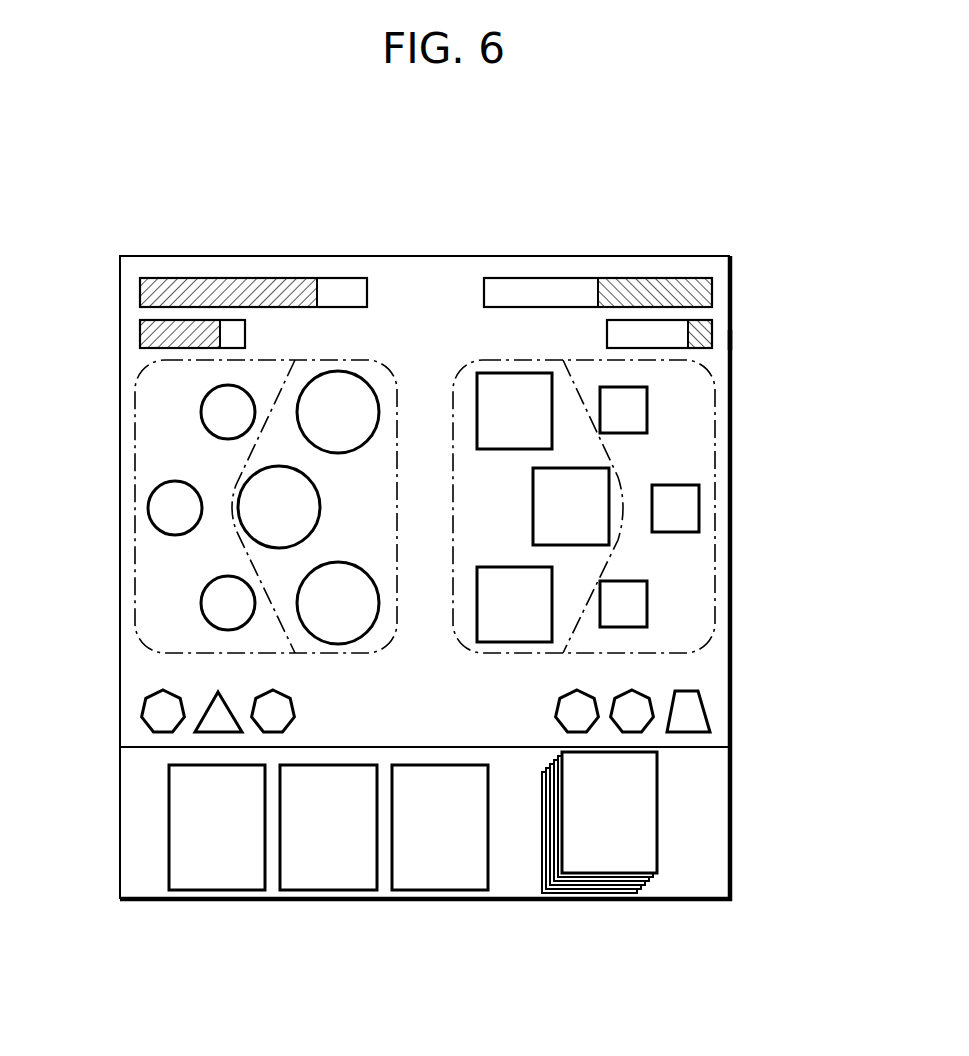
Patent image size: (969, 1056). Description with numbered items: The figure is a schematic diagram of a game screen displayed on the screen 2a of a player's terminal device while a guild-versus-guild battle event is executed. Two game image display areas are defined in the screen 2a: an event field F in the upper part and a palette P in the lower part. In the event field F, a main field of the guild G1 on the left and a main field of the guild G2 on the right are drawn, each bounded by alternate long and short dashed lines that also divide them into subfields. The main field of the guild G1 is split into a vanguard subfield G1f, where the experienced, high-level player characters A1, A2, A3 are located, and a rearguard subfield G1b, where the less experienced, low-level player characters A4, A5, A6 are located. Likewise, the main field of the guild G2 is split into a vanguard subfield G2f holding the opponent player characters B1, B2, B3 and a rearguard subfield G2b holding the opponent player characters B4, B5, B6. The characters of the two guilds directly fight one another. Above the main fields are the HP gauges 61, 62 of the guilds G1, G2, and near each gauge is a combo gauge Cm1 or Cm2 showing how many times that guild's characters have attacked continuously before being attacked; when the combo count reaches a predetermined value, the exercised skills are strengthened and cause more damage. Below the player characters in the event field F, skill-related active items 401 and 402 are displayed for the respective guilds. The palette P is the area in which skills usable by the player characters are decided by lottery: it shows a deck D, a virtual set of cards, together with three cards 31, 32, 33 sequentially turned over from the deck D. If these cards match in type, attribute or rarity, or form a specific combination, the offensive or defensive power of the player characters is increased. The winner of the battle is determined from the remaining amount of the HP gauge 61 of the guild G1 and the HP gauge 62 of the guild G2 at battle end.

The HP gauge 61 is at (265, 278).
The HP gauge 62 is at (612, 278).
The combo gauge Cm1 is at (156, 350).
The combo gauge Cm2 is at (713, 345).
The screen 2a is at (733, 342).
The event field F is at (430, 356).
The guild G1 is at (135, 500).
The subfield G1b is at (198, 461).
The subfield G1f is at (385, 517).
The player character A1 is at (338, 412).
The player character A2 is at (279, 507).
The player character A3 is at (338, 603).
The player character A4 is at (228, 412).
The player character A5 is at (175, 508).
The player character A6 is at (228, 603).
The guild G2 is at (713, 505).
The subfield G2b is at (688, 467).
The subfield G2f is at (507, 524).
The player character B1 is at (514, 411).
The player character B2 is at (571, 506).
The player character B3 is at (514, 604).
The player character B4 is at (623, 410).
The player character B5 is at (675, 508).
The player character B6 is at (623, 604).
The active item 401 is at (141, 692).
The active item 402 is at (709, 692).
The palette P is at (133, 792).
The card 31 is at (217, 827).
The card 32 is at (328, 827).
The card 33 is at (440, 827).
The deck D is at (657, 808).